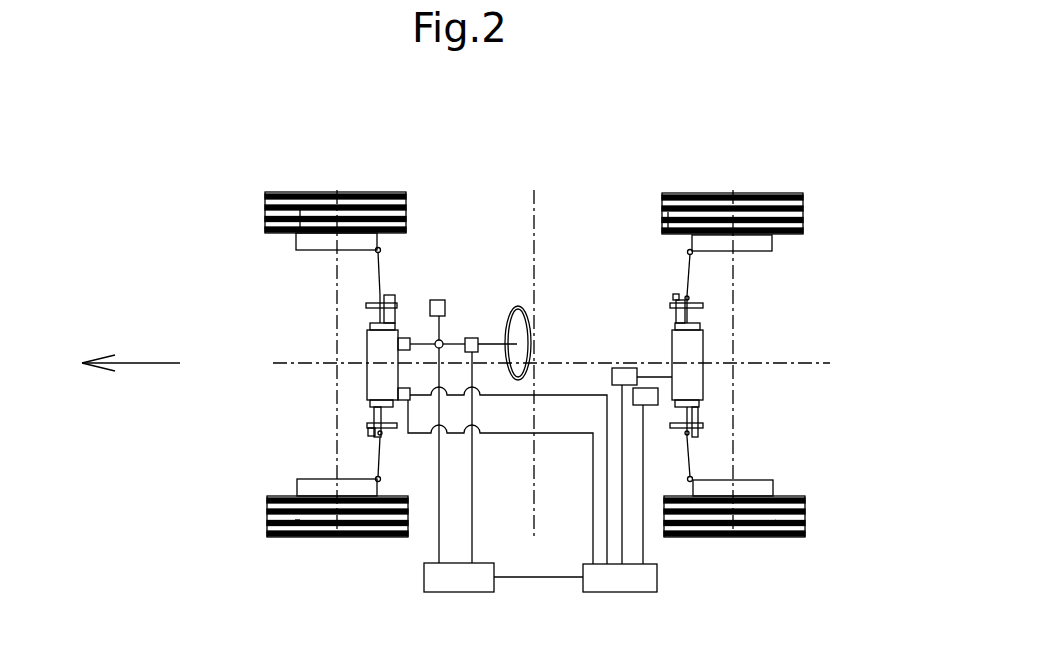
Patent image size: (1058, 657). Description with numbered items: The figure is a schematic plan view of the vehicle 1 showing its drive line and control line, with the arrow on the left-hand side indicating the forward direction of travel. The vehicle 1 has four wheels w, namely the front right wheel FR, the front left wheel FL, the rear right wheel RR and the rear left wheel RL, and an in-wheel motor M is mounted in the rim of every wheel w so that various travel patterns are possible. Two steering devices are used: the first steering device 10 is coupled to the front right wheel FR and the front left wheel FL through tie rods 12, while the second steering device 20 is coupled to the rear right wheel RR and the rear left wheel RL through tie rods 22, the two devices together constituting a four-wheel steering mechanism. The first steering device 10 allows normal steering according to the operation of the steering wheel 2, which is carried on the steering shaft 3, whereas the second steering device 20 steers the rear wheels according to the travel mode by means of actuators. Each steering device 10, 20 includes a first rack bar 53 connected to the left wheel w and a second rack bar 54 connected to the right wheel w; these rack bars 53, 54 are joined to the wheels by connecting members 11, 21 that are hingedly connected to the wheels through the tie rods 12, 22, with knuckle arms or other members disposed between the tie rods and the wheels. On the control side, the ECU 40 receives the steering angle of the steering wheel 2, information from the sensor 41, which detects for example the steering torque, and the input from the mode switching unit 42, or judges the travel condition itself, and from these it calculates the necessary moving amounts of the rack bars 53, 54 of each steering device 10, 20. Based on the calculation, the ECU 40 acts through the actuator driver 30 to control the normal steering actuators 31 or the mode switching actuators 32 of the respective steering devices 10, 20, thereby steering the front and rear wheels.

The vehicle 1 is at (538, 154).
The steering wheel 2 is at (535, 320).
The steering shaft 3 is at (504, 318).
The first steering device 10 is at (380, 375).
The connecting member 11 is at (378, 312).
The tie rod 12 is at (378, 263).
The second steering device 20 is at (693, 375).
The connecting member 21 is at (690, 315).
The tie rod 22 is at (690, 270).
The actuator driver 30 is at (625, 580).
The normal steering actuator 31 is at (405, 338).
The mode switching actuator 32 is at (410, 400).
The electric control unit (ECU) 40 is at (431, 582).
The sensor 41 is at (472, 338).
The mode switching unit 42 is at (440, 300).
The first rack bar 53 is at (380, 412).
The second rack bar 54 is at (372, 322).
The in-wheel motor M is at (297, 250).
The wheel w is at (389, 186).
The front right wheel FR is at (301, 205).
The front left wheel FL is at (295, 520).
The rear right wheel RR is at (668, 213).
The rear left wheel RL is at (775, 520).